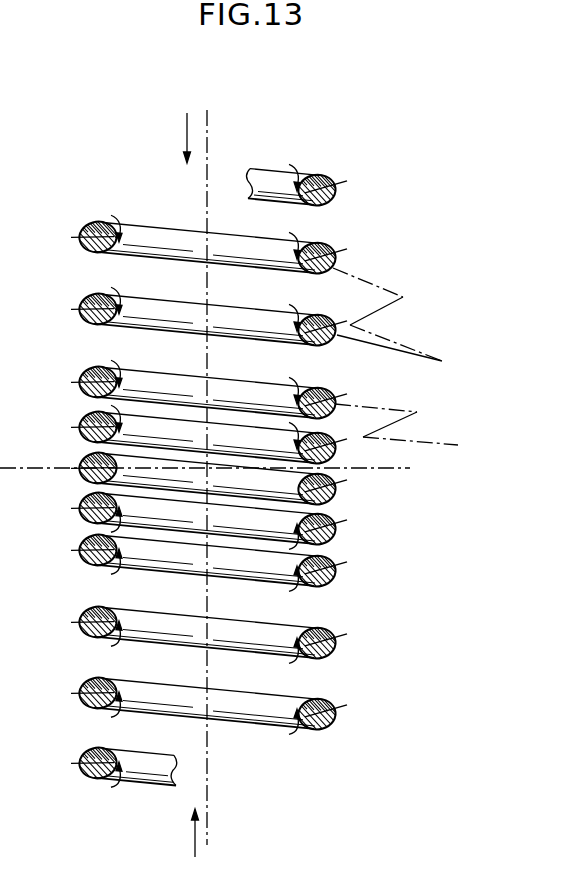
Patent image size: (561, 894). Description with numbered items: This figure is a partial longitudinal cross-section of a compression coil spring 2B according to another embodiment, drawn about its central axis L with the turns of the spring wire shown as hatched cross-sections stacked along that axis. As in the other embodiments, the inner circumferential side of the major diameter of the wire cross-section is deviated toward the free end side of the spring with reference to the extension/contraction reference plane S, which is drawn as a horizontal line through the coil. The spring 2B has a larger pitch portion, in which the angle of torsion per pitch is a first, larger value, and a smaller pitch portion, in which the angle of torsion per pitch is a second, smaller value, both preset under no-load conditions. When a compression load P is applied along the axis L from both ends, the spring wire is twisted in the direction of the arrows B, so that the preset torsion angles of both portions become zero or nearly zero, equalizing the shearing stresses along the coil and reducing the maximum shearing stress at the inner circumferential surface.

The compression coil spring 2B is at (387, 247).
The spring axis L is at (206, 471).
The compression load P is at (182, 500).
The extension/contraction reference plane S is at (212, 471).
The direction of twisting of the spring wire B is at (129, 507).